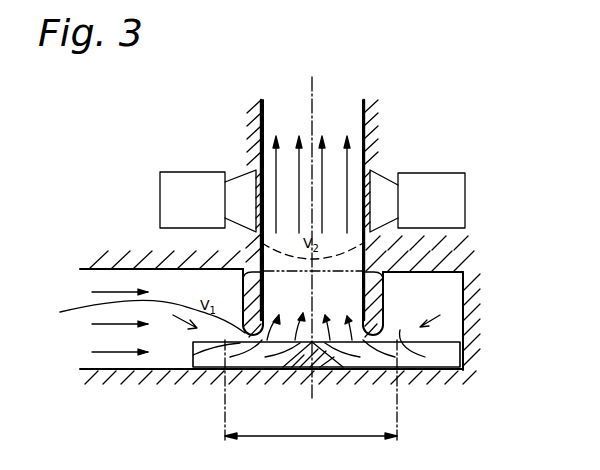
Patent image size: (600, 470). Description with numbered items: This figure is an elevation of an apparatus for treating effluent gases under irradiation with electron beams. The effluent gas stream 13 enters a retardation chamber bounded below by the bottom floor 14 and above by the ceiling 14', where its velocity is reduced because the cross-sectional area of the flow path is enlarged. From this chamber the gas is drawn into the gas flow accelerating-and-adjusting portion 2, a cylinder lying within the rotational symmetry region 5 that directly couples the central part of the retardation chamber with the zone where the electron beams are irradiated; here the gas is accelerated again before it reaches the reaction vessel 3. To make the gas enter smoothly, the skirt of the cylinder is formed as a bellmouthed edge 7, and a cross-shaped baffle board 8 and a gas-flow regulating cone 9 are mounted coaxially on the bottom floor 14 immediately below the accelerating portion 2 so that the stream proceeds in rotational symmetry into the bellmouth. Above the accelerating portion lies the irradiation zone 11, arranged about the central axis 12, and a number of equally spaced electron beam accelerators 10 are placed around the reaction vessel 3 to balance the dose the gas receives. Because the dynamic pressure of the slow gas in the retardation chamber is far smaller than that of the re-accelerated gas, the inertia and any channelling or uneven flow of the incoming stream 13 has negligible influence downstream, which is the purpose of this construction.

The gas flow accelerating-and-adjusting portion 2 is at (397, 297).
The reaction vessel under irradiation with electron beams 3 is at (260, 147).
The rotational symmetry region 5 is at (311, 391).
The bellmouthed edge 7 is at (75, 311).
The cross-shaped baffle board 8 is at (440, 342).
The gas-flow regulating cone 9 is at (387, 367).
The transducer 10 is at (440, 172).
The irradiation zone 11 is at (337, 152).
The central axis of the irradiation zone 12 is at (313, 97).
The gas stream 13 is at (108, 292).
The bottom floor of the gas stream retardation chamber 14 is at (278, 406).
The ceiling of the gas stream retardation chamber 14' is at (277, 232).